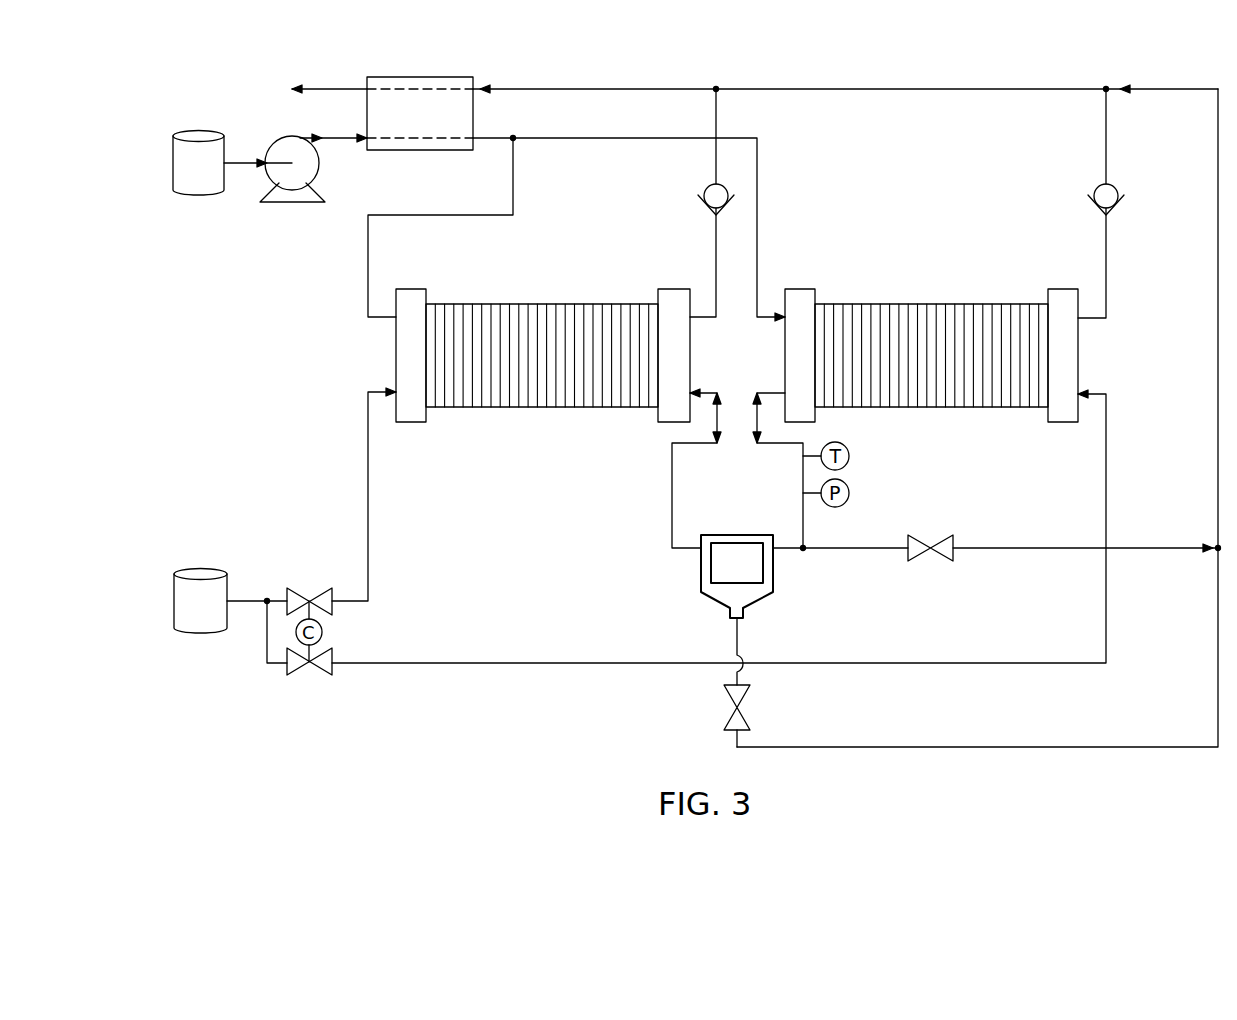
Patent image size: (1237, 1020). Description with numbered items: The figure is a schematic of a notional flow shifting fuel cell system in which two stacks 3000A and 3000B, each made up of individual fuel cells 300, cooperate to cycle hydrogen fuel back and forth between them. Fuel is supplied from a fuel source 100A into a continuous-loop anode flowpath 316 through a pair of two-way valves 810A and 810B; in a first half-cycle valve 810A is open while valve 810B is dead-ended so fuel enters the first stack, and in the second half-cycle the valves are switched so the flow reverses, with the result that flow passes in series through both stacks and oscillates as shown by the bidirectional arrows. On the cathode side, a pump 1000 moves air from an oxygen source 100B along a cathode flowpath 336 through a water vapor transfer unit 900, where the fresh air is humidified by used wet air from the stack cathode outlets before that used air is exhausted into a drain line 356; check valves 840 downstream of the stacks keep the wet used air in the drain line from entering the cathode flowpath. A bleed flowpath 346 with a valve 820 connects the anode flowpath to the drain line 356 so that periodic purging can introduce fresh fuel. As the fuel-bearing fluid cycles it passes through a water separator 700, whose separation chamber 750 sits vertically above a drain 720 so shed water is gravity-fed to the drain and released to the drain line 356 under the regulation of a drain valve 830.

The fuel source 100A is at (198, 636).
The oxygen source 100B is at (198, 196).
The pump 1000 is at (290, 203).
The cathode flowpath 336 is at (335, 142).
The water vapor transfer unit 900 is at (415, 77).
The first stack 3000A is at (425, 266).
The second stack 3000B is at (815, 266).
The fuel cell 300 is at (543, 304).
The check valve 840 is at (704, 186).
The anode flowpath 316 is at (370, 500).
The valve 810A is at (307, 576).
The valve 810B is at (313, 676).
The drain line 356 is at (1218, 407).
The bleed flowpath 346 is at (883, 551).
The valve 820 is at (925, 537).
The water separator 700 is at (773, 586).
The separation chamber 750 is at (710, 580).
The drain 720 is at (737, 644).
The drain valve 830 is at (752, 716).